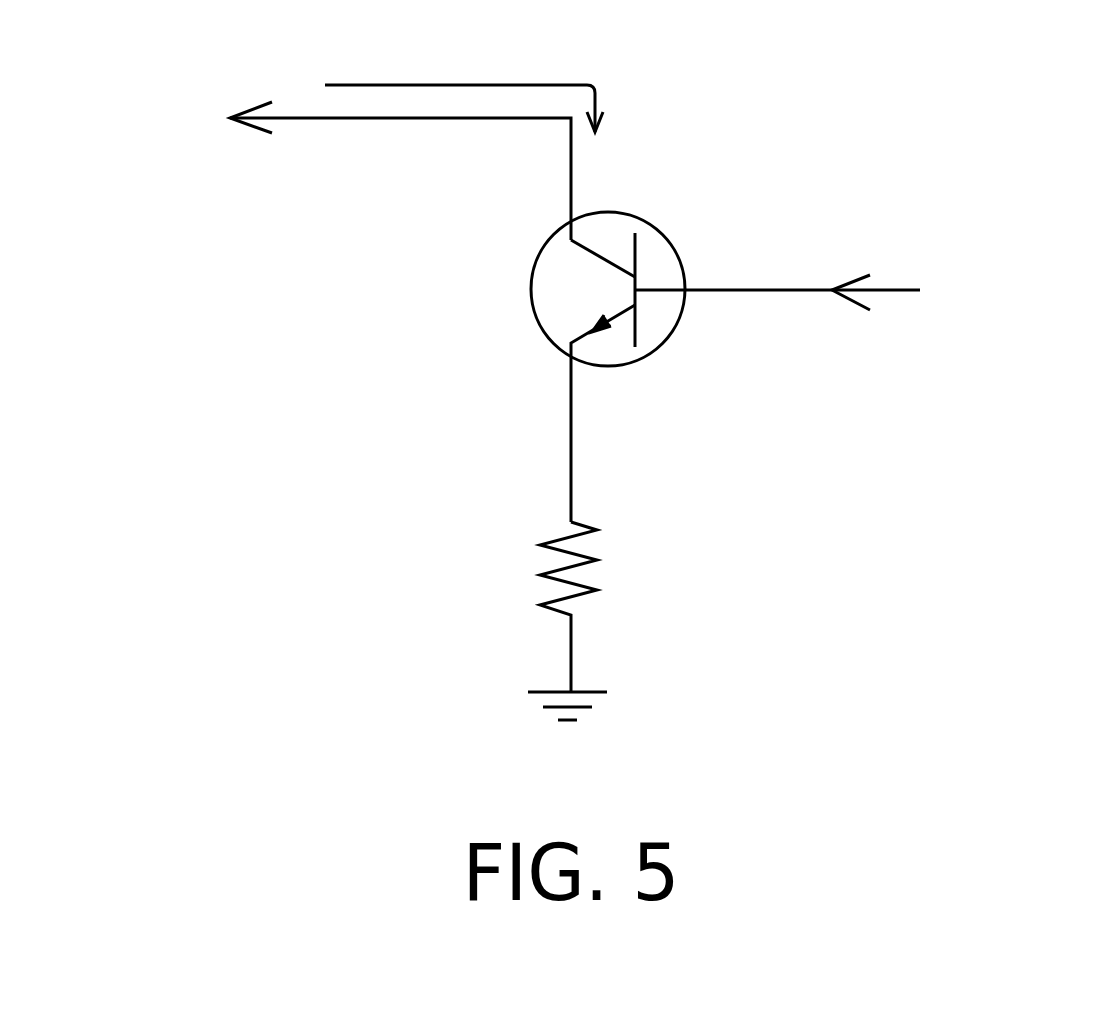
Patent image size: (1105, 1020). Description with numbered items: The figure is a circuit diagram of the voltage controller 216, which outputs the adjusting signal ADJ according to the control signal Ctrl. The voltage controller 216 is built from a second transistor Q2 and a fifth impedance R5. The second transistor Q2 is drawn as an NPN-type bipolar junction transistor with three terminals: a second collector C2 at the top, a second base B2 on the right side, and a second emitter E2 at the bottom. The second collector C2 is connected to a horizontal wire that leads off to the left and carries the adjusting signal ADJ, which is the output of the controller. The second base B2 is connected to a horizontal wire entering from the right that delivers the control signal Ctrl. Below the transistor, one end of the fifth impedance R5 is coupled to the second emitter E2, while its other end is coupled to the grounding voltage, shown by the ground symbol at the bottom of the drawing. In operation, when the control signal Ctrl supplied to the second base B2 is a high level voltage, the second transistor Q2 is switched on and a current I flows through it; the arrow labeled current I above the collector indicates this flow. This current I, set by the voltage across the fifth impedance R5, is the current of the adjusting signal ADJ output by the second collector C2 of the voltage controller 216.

The voltage controller 216 is at (985, 85).
The second transistor Q2 is at (725, 335).
The second collector C2 is at (603, 213).
The second base B2 is at (777, 319).
The second emitter E2 is at (603, 413).
The fifth impedance R5 is at (601, 607).
The current I is at (478, 89).
The adjusting signal ADJ is at (363, 164).
The control signal Ctrl is at (927, 296).